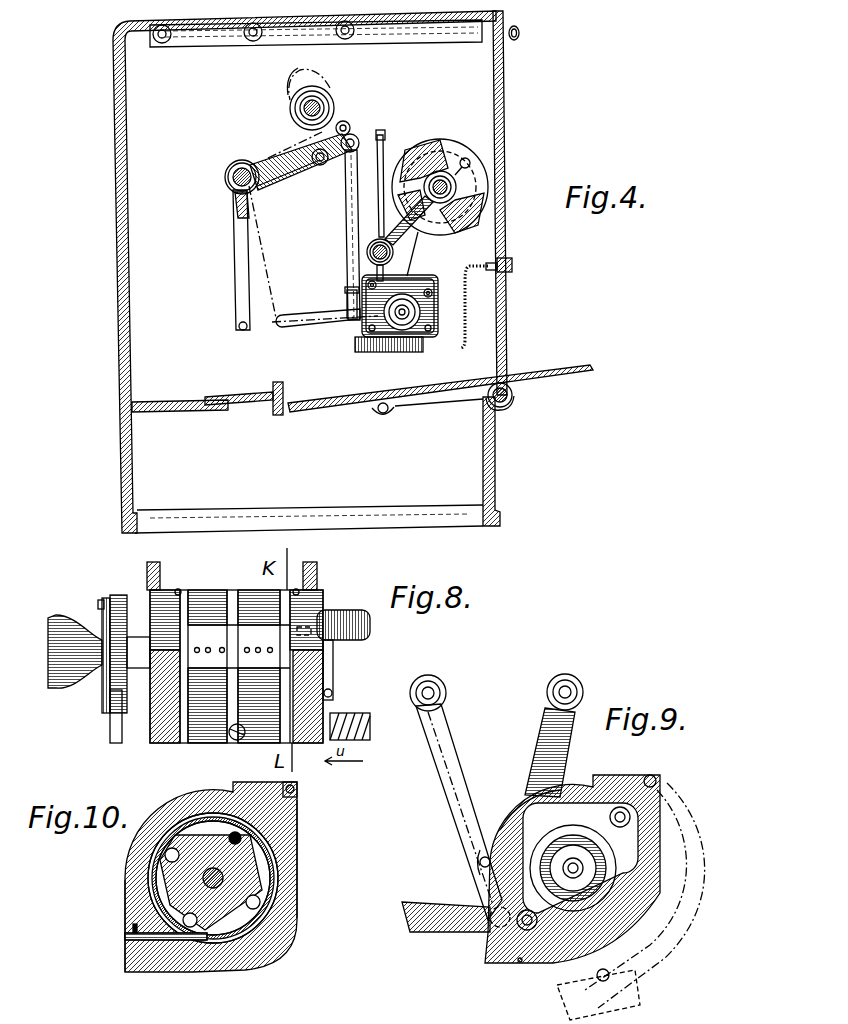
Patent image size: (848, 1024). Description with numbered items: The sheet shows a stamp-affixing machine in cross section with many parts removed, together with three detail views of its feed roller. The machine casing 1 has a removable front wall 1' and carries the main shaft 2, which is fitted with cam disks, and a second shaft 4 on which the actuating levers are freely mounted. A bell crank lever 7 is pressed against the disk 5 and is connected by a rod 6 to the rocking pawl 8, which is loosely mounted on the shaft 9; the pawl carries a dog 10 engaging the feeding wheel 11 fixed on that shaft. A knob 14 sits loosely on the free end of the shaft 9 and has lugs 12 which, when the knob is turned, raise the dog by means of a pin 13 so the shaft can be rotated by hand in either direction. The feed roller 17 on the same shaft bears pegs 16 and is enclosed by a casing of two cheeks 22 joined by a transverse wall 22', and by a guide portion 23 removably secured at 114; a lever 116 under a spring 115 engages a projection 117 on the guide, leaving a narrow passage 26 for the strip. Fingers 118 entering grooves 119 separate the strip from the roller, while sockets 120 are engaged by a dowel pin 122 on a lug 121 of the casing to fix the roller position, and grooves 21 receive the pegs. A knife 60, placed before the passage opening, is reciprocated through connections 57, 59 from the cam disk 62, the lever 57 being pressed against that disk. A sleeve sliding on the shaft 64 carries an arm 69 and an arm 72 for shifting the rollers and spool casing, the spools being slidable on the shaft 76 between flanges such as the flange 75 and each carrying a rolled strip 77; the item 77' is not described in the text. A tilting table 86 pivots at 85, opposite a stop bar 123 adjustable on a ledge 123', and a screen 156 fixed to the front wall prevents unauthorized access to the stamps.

In FIG. 4, the machine casing 1 is at (304, 272).
In FIG. 4, the front wall 1' is at (505, 268).
In FIG. 4, the shaft 2 is at (298, 108).
In FIG. 4, the shaft 4 is at (228, 166).
In FIG. 4, the disk 5 is at (298, 142).
In FIG. 4, the rod 6 is at (300, 328).
In FIG. 9, the rod 6 is at (445, 906).
In FIG. 4, the bell crank lever 7 is at (234, 215).
In FIG. 8, the rocking pawl 8 is at (122, 598).
In FIG. 9, the rocking pawl 8 is at (583, 800).
In FIG. 4, the shaft 9 is at (402, 340).
In FIG. 10, the shaft 9 is at (128, 880).
In FIG. 9, the shaft 9 is at (572, 869).
In FIG. 9, the dog 10 is at (640, 823).
In FIG. 8, the feeding wheel 11 is at (108, 598).
In FIG. 9, the feeding wheel 11 is at (645, 875).
In FIG. 8, the lugs 12 is at (108, 712).
In FIG. 9, the lugs 12 is at (612, 895).
In FIG. 8, the pin 13 is at (102, 603).
In FIG. 9, the pin 13 is at (650, 850).
In FIG. 4, the knob 14 is at (425, 318).
In FIG. 8, the knob 14 is at (88, 680).
In FIG. 8, the pins or pegs 16 is at (205, 592).
In FIG. 10, the pins or pegs 16 is at (228, 945).
In FIG. 8, the feed roller 17 is at (243, 592).
In FIG. 10, the feed roller 17 is at (260, 927).
In FIG. 10, the grooves 21 is at (150, 847).
In FIG. 8, the cheeks 22 is at (243, 696).
In FIG. 10, the transverse wall 22' is at (106, 926).
In FIG. 9, the transverse wall 22' is at (524, 809).
In FIG. 10, the guide portion 23 is at (292, 872).
In FIG. 9, the guide portion 23 is at (688, 942).
In FIG. 10, the passage 26 is at (204, 889).
In FIG. 4, the lever 57 is at (344, 121).
In FIG. 4, the connection 59 is at (347, 186).
In FIG. 4, the knife 60 is at (346, 303).
In FIG. 4, the cam disk 62 is at (326, 92).
In FIG. 4, the shaft 64 is at (390, 260).
In FIG. 4, the arm 69 is at (383, 134).
In FIG. 4, the arm 72 is at (400, 212).
In FIG. 4, the flange 75 is at (430, 142).
In FIG. 4, the shaft 76 is at (443, 170).
In FIG. 4, the rolled strip 77 is at (470, 201).
In FIG. 4, the pawl 77' is at (429, 254).
In FIG. 4, the pivot 85 is at (510, 401).
In FIG. 4, the tilting table 86 is at (316, 402).
In FIG. 9, the securing point 114 is at (651, 774).
In FIG. 8, the spring 115 is at (350, 718).
In FIG. 9, the spring 115 is at (478, 862).
In FIG. 8, the lever 116 is at (332, 672).
In FIG. 9, the lever 116 is at (542, 738).
In FIG. 9, the projection 117 is at (520, 962).
In FIG. 8, the fingers 118 is at (230, 738).
In FIG. 10, the fingers 118 is at (125, 937).
In FIG. 8, the grooves 119 is at (178, 590).
In FIG. 10, the sockets 120 is at (172, 847).
In FIG. 8, the lug 121 is at (330, 618).
In FIG. 8, the dowel pin 122 is at (305, 632).
In FIG. 10, the dowel pin 122 is at (275, 845).
In FIG. 4, the stop bar 123 is at (244, 395).
In FIG. 4, the ledge 123' is at (180, 395).
In FIG. 4, the screen 156 is at (470, 318).